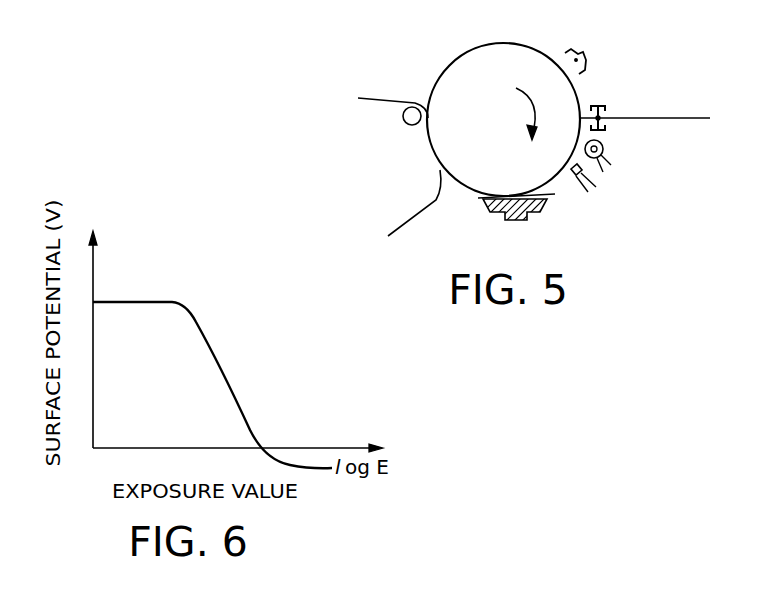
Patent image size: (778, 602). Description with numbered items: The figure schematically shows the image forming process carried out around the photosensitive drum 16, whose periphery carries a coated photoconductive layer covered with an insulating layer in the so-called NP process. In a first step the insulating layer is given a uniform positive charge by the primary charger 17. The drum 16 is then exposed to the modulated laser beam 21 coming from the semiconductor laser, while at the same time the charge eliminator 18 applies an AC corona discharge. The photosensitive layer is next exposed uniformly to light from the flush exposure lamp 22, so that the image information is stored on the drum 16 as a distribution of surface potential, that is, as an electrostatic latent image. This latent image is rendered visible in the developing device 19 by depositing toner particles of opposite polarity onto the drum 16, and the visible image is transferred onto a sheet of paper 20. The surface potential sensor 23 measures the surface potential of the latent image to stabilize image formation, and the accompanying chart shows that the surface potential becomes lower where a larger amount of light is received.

The photosensitive drum 16 is at (491, 44).
The primary charger 17 is at (583, 58).
The charge eliminator 18 is at (601, 106).
The developing device 19 is at (535, 208).
The sheet of paper 20 is at (425, 206).
The modulated laser beam 21 is at (676, 118).
The flush exposure lamp 22 is at (604, 150).
The surface potential sensor 23 is at (582, 181).